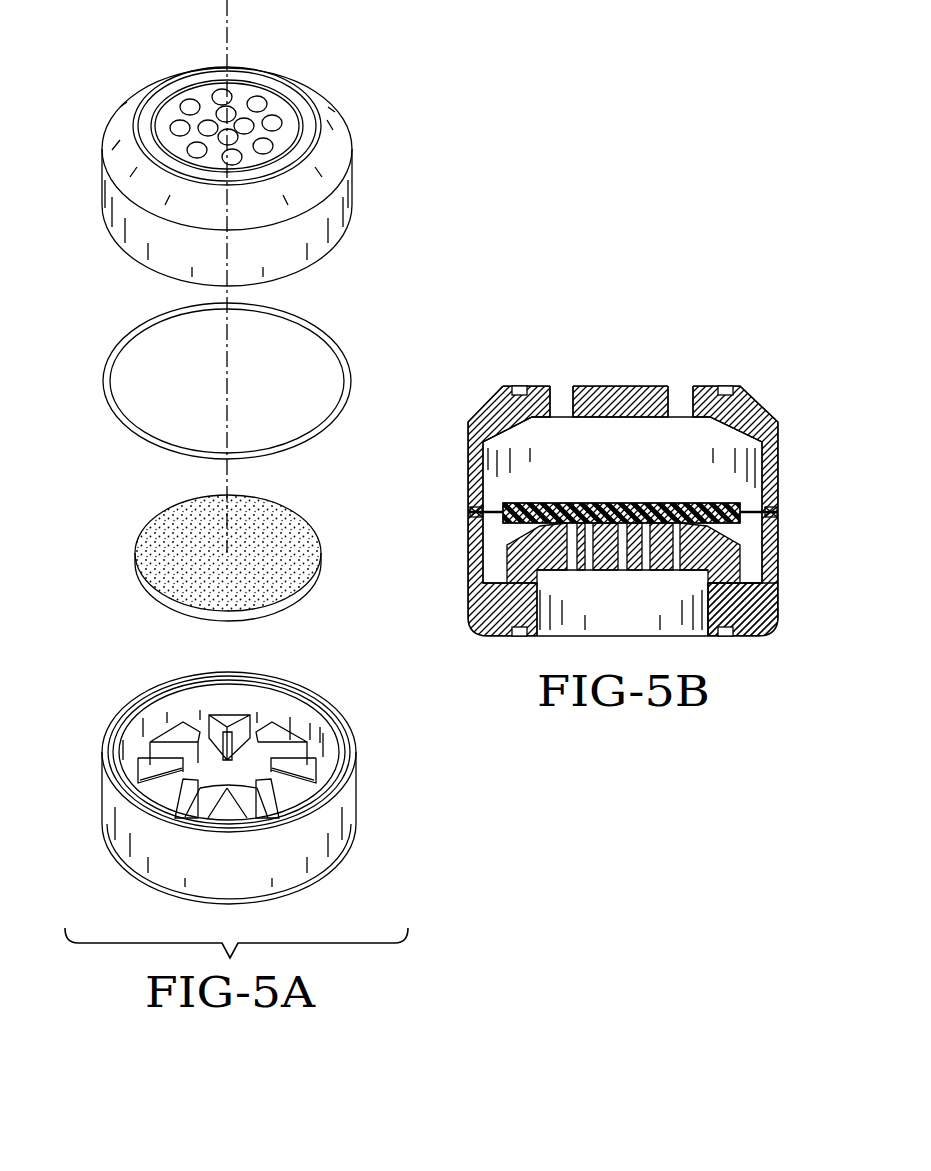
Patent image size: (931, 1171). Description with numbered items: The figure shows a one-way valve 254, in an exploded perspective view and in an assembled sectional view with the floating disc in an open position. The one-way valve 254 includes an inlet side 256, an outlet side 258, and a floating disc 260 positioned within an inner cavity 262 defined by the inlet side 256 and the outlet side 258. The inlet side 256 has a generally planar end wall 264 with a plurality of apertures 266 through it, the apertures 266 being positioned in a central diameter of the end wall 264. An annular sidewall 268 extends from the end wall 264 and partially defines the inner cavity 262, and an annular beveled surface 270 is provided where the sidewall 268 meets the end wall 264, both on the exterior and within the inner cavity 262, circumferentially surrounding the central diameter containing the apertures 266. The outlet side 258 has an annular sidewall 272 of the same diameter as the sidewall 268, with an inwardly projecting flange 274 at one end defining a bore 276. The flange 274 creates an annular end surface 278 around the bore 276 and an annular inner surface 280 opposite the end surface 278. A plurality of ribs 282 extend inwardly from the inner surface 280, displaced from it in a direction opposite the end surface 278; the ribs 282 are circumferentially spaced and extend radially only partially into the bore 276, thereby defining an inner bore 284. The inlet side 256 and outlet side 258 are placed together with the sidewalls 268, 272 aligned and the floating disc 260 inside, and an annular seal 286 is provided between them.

In FIG. 5A, the one-way valve 254 is at (368, 42).
In FIG. 5B, the one-way valve 254 is at (764, 389).
In FIG. 5A, the inlet side 256 is at (368, 159).
In FIG. 5B, the inlet side 256 is at (466, 434).
In FIG. 5A, the outlet side 258 is at (359, 798).
In FIG. 5B, the outlet side 258 is at (466, 583).
In FIG. 5A, the floating disc 260 is at (141, 527).
In FIG. 5B, the floating disc 260 is at (520, 498).
In FIG. 5A, the inner cavity 262 is at (288, 695).
In FIG. 5B, the inner cavity 262 is at (754, 539).
In FIG. 5A, the end wall 264 is at (283, 107).
In FIG. 5B, the end wall 264 is at (615, 386).
In FIG. 5A, the apertures 266 is at (188, 103).
In FIG. 5B, the apertures 266 is at (562, 388).
In FIG. 5A, the annular sidewall 268 is at (112, 208).
In FIG. 5B, the annular sidewall 268 is at (770, 463).
In FIG. 5A, the annular beveled surface 270 is at (310, 190).
In FIG. 5A, the annular sidewall 272 is at (353, 770).
In FIG. 5B, the annular sidewall 272 is at (768, 591).
In FIG. 5A, the inwardly projecting flange 274 is at (116, 768).
In FIG. 5A, the bore 276 is at (205, 759).
In FIG. 5B, the bore 276 is at (640, 629).
In FIG. 5A, the annular end surface 278 is at (329, 877).
In FIG. 5A, the annular inner surface 280 is at (148, 750).
In FIG. 5A, the ribs 282 is at (173, 797).
In FIG. 5B, the ribs 282 is at (522, 530).
In FIG. 5A, the inner bore 284 is at (266, 731).
In FIG. 5B, the inner bore 284 is at (645, 538).
In FIG. 5A, the annular seal 286 is at (112, 372).
In FIG. 5B, the annular seal 286 is at (468, 512).